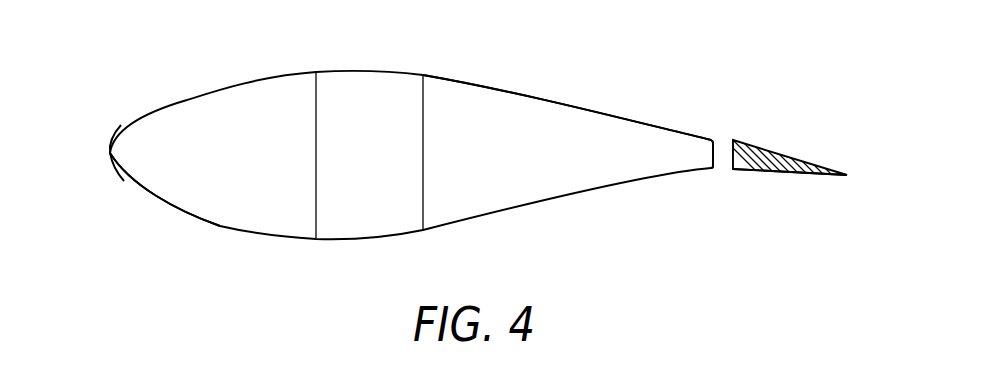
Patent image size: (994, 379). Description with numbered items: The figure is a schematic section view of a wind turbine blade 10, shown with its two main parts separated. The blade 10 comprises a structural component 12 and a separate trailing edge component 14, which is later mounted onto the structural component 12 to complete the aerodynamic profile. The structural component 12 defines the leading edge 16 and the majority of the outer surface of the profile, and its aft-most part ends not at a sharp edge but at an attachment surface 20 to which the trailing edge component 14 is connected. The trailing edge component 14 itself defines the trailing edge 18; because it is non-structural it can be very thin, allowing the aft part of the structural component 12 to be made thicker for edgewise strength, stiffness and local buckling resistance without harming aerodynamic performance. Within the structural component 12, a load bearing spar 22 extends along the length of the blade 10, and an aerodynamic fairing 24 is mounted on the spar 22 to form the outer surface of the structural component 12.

The wind turbine blade 10 is at (178, 55).
The structural component 12 is at (465, 91).
The trailing edge component 14 is at (770, 151).
The leading edge 16 is at (108, 153).
The trailing edge 18 is at (847, 175).
The attachment surface 20 is at (714, 169).
The load bearing spar 22 is at (370, 229).
The aerodynamic fairing 24 is at (222, 224).